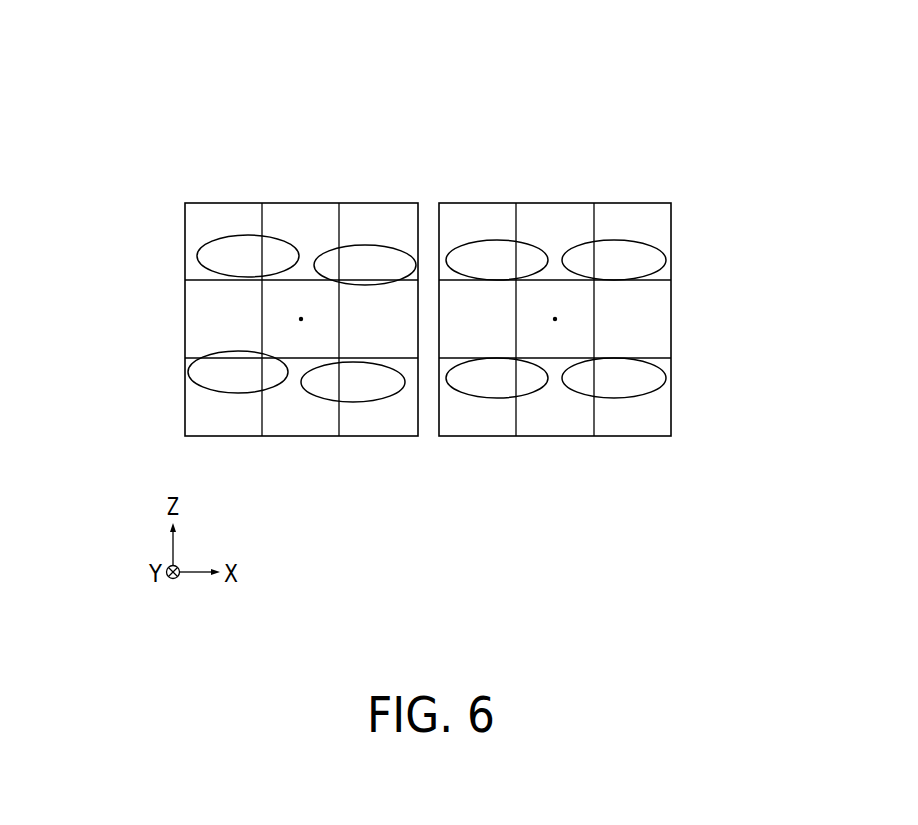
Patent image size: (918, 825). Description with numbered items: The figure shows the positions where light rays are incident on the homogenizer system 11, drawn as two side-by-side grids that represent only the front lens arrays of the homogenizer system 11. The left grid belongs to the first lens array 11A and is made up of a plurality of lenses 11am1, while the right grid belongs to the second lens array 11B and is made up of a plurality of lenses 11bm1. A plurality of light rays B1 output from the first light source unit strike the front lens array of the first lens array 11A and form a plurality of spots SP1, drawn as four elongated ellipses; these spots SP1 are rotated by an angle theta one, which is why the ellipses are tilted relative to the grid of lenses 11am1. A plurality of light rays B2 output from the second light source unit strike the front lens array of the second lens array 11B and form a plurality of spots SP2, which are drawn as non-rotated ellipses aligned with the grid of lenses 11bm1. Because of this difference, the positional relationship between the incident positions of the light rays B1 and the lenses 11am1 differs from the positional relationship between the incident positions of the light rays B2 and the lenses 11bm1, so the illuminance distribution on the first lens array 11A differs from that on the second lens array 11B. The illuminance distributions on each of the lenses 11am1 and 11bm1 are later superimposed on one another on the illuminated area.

The homogenizer system 11 is at (650, 82).
The first lens array 11A is at (380, 203).
The second lens array 11B is at (613, 203).
The lenses of the front lens array of the first lens array 11am1 is at (225, 215).
The lenses of the front lens array of the second lens array 11bm1 is at (473, 215).
The light rays B1 is at (337, 247).
The light rays B2 is at (528, 243).
The spots SP1 is at (196, 235).
The spots SP2 is at (657, 239).